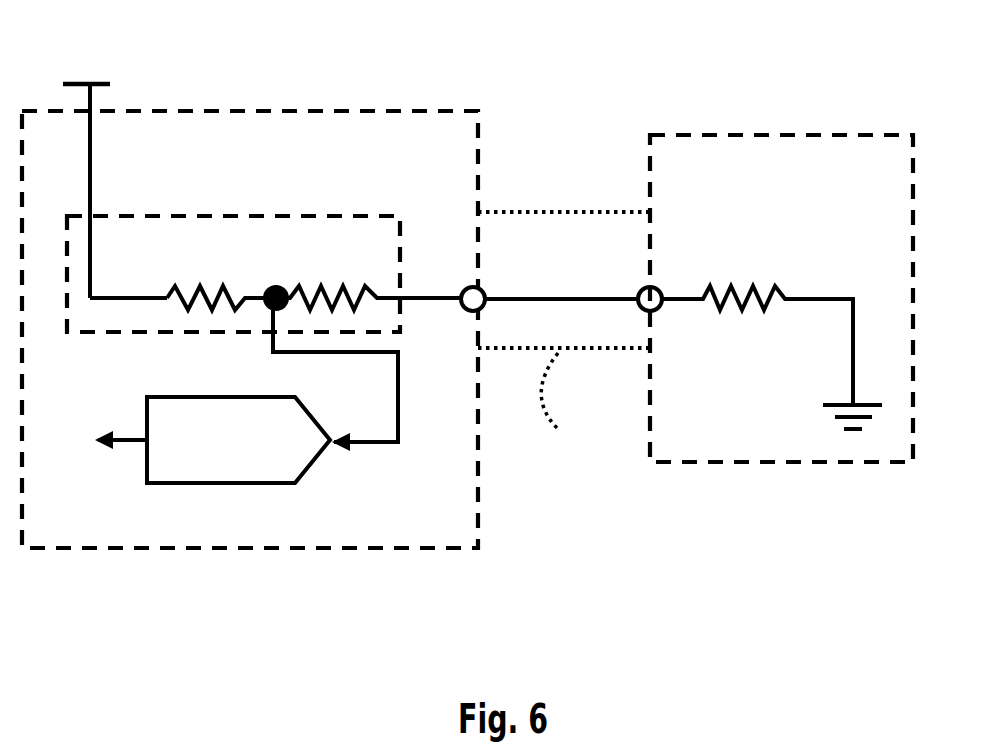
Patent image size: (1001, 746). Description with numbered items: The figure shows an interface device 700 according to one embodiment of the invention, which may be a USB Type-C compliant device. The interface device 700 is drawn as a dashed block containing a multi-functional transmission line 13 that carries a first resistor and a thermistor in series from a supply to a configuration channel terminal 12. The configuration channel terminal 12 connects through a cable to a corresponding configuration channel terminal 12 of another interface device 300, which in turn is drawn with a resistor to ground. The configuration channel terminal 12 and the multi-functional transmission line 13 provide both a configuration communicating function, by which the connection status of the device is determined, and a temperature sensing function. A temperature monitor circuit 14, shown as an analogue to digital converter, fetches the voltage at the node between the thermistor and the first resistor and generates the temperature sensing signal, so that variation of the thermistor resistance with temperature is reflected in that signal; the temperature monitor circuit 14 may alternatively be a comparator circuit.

The interface device 700 is at (291, 110).
The multi-functional transmission line 13 is at (352, 215).
The configuration channel terminal 12 is at (462, 292).
The interface device 300 is at (683, 130).
The temperature monitor circuit 14 is at (315, 467).